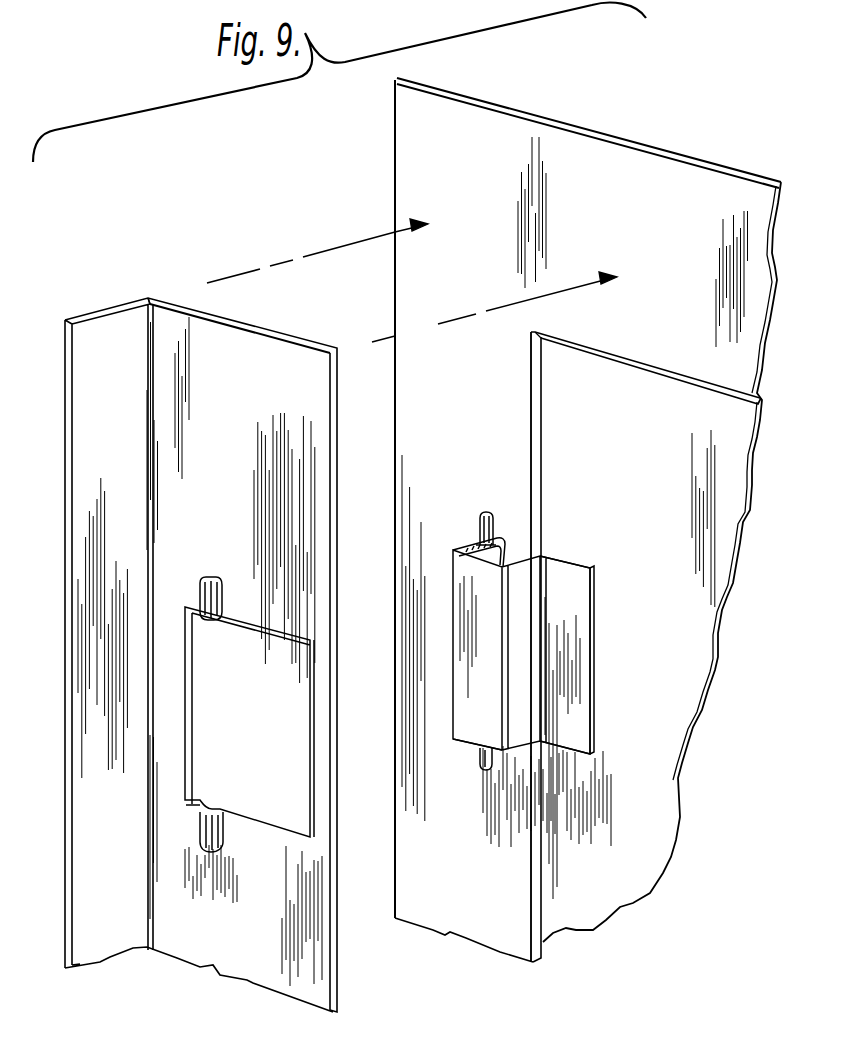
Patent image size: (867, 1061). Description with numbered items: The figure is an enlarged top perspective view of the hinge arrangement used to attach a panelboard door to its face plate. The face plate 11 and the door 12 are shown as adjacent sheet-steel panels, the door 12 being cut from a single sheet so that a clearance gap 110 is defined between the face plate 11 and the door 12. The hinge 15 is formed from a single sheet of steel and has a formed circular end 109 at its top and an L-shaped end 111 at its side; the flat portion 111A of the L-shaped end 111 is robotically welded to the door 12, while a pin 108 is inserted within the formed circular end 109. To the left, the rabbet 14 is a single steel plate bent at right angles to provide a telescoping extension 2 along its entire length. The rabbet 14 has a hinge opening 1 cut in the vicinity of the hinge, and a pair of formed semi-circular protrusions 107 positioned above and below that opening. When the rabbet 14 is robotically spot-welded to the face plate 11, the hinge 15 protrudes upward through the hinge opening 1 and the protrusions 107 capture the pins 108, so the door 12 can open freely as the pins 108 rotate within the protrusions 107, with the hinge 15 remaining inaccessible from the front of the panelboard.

The hinge opening 1 is at (277, 633).
The telescoping extension 2 is at (102, 935).
The rabbet 14 is at (262, 975).
The hinge 15 is at (467, 746).
The face plate 11 is at (478, 907).
The door 12 is at (645, 467).
The semi-circular protrusions 107 is at (216, 580).
The pin 108 is at (490, 513).
The formed circular end 109 is at (497, 543).
The clearance gap 110 is at (533, 397).
The L-shaped end 111 is at (520, 737).
The flat portion 111A is at (578, 681).